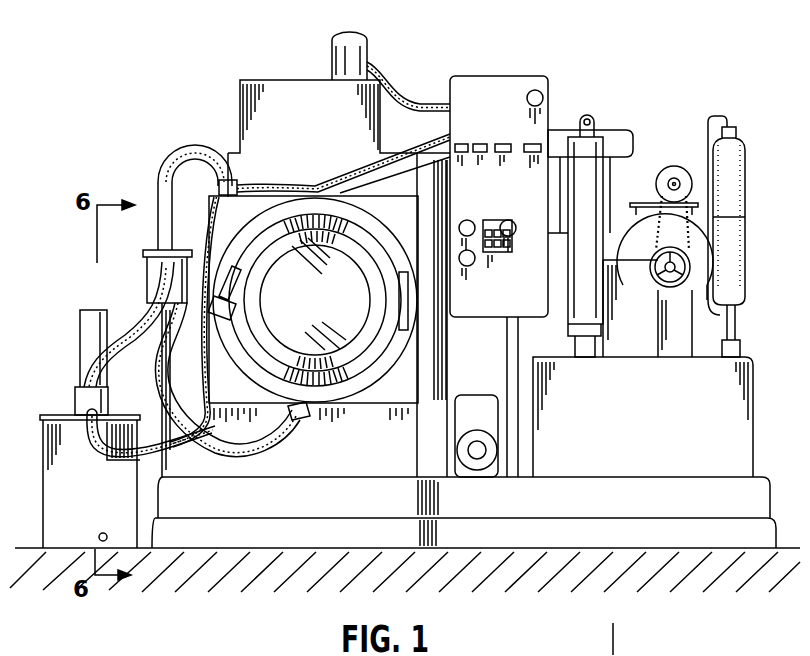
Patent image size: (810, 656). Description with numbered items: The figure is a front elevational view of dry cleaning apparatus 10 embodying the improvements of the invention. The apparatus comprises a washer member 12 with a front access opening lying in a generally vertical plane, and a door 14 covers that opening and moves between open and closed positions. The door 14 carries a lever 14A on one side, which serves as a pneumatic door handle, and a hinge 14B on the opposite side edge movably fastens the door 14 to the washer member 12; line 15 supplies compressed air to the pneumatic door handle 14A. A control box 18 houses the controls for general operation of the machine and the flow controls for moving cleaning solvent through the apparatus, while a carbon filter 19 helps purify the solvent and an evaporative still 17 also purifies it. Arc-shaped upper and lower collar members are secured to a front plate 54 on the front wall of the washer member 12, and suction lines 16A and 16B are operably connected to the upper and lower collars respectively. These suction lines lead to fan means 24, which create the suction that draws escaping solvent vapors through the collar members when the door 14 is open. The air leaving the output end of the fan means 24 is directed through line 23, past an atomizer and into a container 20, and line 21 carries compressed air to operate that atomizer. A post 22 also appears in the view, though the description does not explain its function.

The dry cleaning apparatus 10 is at (586, 104).
The washer member 12 is at (262, 81).
The door 14 is at (279, 189).
The lever 14A is at (208, 260).
The hinge 14B is at (409, 318).
The line 15 is at (409, 151).
The suction line 16A is at (158, 185).
The suction line 16B is at (170, 370).
The evaporative still 17 is at (742, 437).
The control box 18 is at (482, 82).
The carbon filter 19 is at (734, 180).
The container 20 is at (42, 462).
The line 21 is at (166, 479).
The post 22 is at (75, 393).
The line 23 is at (140, 333).
The fan means 24 is at (147, 272).
The front plate 54 is at (386, 403).